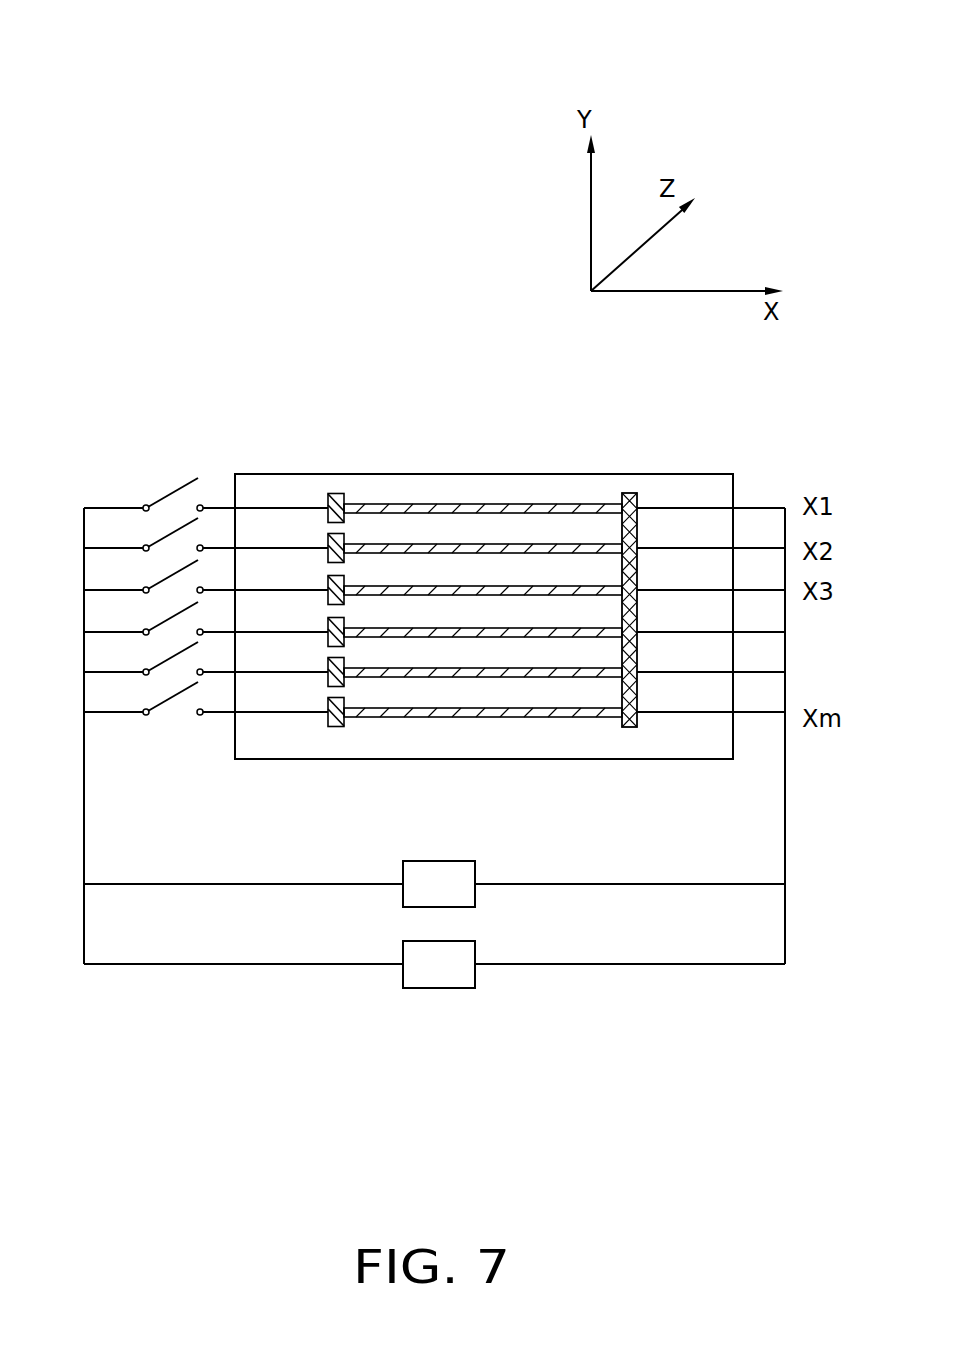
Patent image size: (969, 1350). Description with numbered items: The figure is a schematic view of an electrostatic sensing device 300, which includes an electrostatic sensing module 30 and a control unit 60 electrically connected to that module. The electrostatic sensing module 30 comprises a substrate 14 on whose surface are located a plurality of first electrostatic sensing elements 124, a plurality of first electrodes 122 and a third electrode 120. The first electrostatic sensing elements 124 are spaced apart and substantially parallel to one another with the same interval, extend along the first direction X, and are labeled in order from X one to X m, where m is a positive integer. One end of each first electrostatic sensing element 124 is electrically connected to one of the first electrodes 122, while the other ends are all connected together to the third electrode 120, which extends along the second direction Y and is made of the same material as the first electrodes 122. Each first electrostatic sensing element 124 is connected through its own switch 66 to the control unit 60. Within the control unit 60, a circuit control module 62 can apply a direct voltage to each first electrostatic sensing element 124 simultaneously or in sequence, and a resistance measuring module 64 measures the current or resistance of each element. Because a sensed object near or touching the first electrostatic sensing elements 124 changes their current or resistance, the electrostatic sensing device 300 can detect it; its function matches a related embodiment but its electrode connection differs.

The electrostatic sensing device 300 is at (266, 60).
The substrate 14 is at (277, 483).
The switch 66 is at (170, 489).
The electrostatic sensing module 30 is at (672, 405).
The first electrodes 122 is at (337, 492).
The first electrostatic sensing elements 124 is at (464, 506).
The third electrode 120 is at (629, 493).
The circuit control module 62 is at (462, 871).
The resistance measuring module 64 is at (444, 1012).
The control unit 60 is at (491, 992).